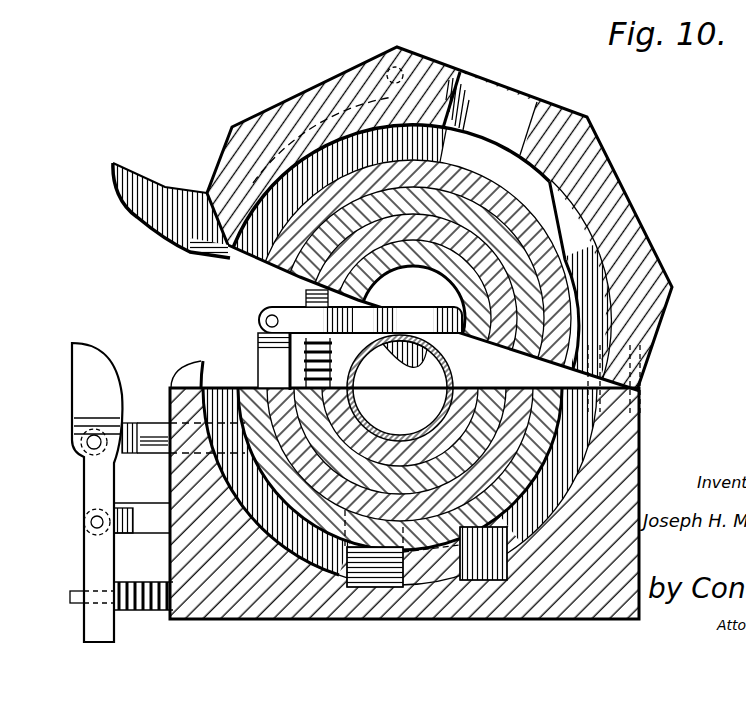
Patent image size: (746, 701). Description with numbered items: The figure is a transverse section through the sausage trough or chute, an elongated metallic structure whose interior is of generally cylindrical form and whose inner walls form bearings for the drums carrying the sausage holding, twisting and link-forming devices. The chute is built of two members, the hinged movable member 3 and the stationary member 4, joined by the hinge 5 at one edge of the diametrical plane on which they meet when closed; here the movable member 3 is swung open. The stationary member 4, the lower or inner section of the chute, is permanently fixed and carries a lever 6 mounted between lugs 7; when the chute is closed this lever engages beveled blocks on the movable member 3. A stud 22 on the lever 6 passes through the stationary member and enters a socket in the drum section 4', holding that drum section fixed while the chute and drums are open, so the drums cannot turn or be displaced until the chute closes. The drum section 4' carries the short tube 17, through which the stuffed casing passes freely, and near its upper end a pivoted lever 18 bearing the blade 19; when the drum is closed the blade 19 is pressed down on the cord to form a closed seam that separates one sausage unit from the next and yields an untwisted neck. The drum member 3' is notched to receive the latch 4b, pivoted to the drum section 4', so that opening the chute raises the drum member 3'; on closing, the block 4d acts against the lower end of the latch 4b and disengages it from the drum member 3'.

The hinged movable member 3 is at (455, 279).
The drum member 3' is at (576, 295).
The stationary member 4 is at (422, 405).
The drum section 4' is at (400, 487).
The latch 4b is at (415, 241).
The block 4d is at (196, 372).
The hinge 5 is at (168, 190).
The lever 6 is at (88, 482).
The lugs 7 is at (140, 517).
The short tube 17 is at (362, 411).
The pivoted lever 18 is at (290, 307).
The blade 19 is at (397, 301).
The stud 22 is at (139, 422).